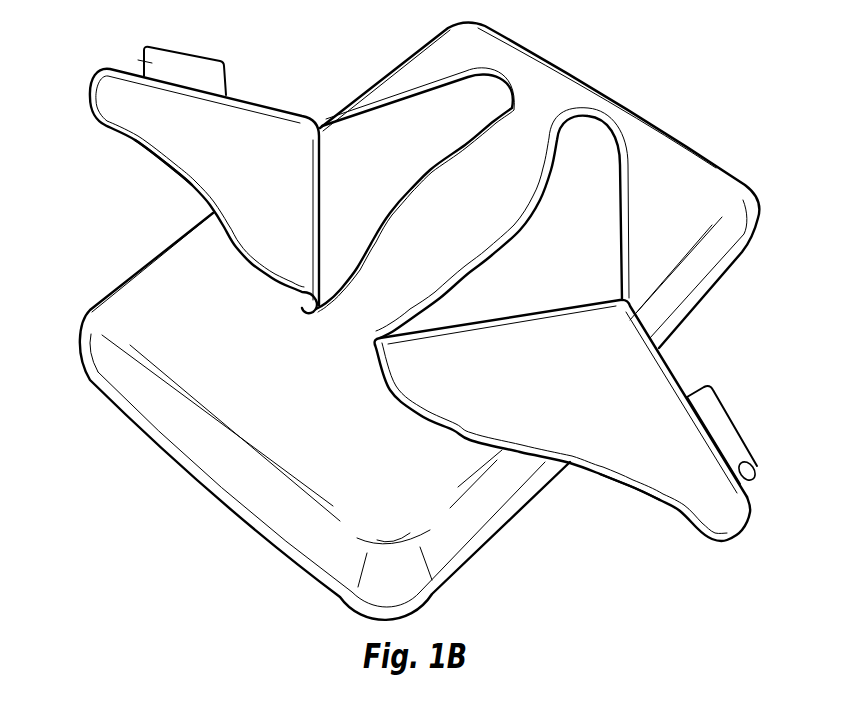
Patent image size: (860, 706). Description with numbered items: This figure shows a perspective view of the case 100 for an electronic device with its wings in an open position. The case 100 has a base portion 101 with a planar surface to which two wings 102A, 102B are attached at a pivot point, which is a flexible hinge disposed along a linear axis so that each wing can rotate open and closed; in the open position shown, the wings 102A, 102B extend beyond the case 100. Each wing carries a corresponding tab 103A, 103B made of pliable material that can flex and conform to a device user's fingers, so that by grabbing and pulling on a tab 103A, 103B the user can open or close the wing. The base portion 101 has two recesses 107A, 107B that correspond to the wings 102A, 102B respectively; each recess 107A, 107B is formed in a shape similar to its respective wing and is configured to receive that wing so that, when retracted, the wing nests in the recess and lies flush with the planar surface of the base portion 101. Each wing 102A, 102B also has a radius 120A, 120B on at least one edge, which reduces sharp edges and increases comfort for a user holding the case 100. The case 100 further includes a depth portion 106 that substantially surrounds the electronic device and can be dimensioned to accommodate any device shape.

The case 100 is at (588, 76).
The base portion 101 is at (703, 193).
The wing 102A is at (730, 512).
The wing 102B is at (117, 103).
The tab 103A is at (736, 437).
The tab 103B is at (147, 62).
The depth portion 106 is at (445, 545).
The recess 107A is at (590, 265).
The recess 107B is at (397, 137).
The radius 120A is at (635, 483).
The radius 120B is at (163, 160).